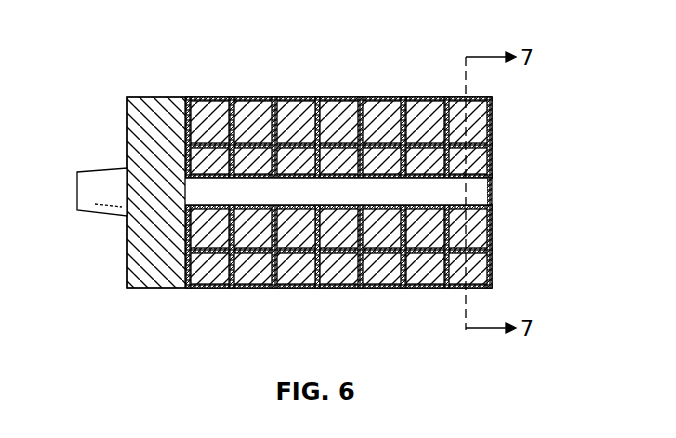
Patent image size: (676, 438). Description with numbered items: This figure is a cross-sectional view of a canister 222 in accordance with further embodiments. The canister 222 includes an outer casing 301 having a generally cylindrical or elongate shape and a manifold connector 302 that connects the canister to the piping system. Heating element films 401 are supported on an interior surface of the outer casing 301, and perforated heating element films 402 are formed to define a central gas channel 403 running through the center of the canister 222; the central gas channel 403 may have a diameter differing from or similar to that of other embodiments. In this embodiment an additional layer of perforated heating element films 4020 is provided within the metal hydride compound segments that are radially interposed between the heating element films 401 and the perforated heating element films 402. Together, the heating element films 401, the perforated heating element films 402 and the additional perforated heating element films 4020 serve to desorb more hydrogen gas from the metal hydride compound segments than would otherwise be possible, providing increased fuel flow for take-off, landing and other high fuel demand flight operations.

The canister 222 is at (149, 92).
The outer casing 301 is at (208, 287).
The manifold connector 302 is at (97, 182).
The heating element films 401 is at (339, 162).
The perforated heating element films 402 is at (339, 163).
The additional perforated heating element films 4020 is at (348, 138).
The central gas channel 403 is at (335, 192).